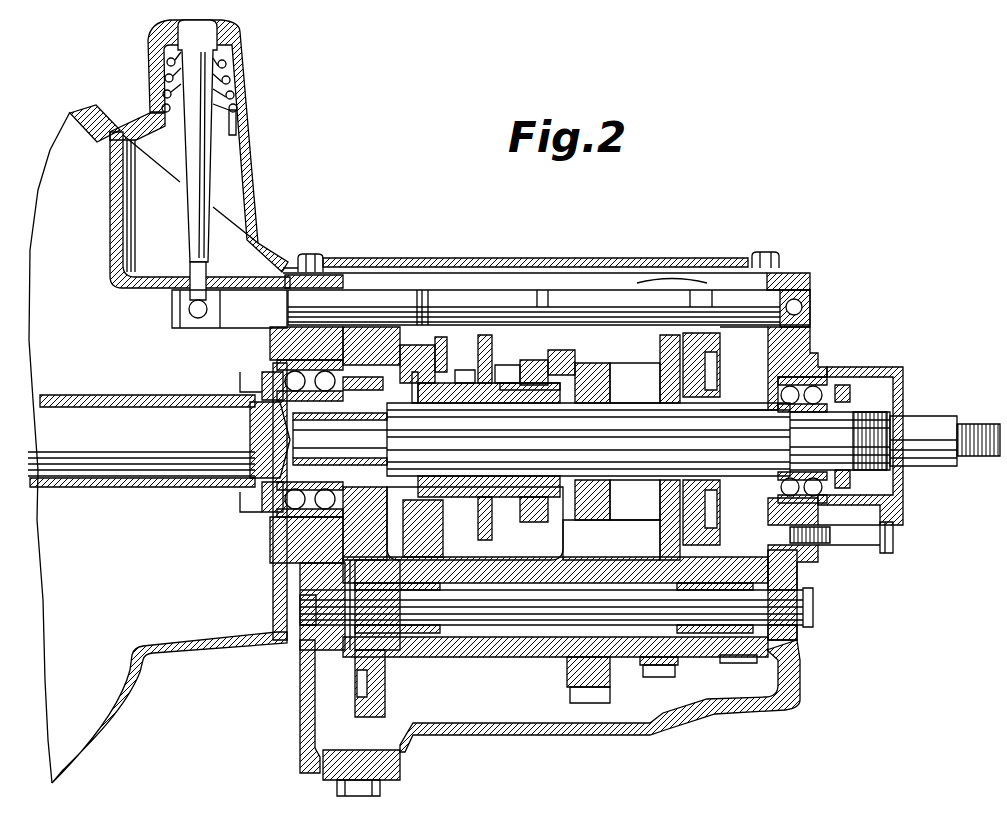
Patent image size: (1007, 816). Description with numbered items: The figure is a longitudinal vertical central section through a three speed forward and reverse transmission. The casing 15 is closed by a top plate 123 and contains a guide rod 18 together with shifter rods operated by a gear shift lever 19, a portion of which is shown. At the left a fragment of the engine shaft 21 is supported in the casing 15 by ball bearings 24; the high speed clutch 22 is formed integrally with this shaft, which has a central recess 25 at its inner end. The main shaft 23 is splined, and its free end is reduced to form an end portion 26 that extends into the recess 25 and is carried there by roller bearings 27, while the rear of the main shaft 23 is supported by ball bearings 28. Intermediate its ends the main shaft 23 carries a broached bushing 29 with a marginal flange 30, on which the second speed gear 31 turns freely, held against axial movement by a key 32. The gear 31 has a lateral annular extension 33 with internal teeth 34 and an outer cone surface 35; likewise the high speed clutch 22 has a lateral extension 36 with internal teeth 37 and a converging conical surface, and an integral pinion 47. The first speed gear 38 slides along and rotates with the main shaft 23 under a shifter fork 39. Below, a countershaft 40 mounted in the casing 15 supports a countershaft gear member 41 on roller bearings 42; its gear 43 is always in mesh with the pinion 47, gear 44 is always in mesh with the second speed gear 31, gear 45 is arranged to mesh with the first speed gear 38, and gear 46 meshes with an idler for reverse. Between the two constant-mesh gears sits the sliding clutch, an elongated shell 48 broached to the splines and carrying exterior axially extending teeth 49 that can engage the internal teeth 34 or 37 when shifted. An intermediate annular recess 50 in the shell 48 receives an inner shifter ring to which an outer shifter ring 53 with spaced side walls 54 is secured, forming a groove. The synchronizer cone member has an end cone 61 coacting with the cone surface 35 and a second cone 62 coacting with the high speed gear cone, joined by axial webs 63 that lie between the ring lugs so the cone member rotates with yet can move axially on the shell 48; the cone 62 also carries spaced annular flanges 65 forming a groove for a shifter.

The casing 15 is at (760, 698).
The guide rod 18 is at (370, 300).
The gear shift lever 19 is at (200, 165).
The engine shaft 21 is at (245, 489).
The high speed clutch 22 is at (395, 378).
The main shaft 23 is at (645, 482).
The ball bearings 24 is at (255, 535).
The recess 25 is at (270, 520).
The end portion 26 is at (313, 438).
The roller bearings 27 is at (265, 490).
The ball bearings 28 is at (815, 393).
The bushing 29 is at (545, 510).
The marginal flange 30 is at (628, 478).
The second speed gear 31 is at (625, 378).
The key 32 is at (590, 370).
The lateral annular extension 33 is at (548, 530).
The internal teeth 34 is at (560, 362).
The cone surface 35 is at (525, 500).
The lateral extension 36 is at (415, 375).
The internal teeth 37 is at (410, 518).
The first speed gear 38 is at (712, 370).
The shifter fork 39 is at (662, 375).
The countershaft 40 is at (780, 627).
The countershaft gear member 41 is at (520, 650).
The roller bearings 42 is at (420, 640).
The gear 43 is at (388, 708).
The gear 44 is at (572, 685).
The gear 45 is at (660, 672).
The gear 46 is at (735, 655).
The pinion 47 is at (365, 390).
The shell 48 is at (465, 380).
The axially extending teeth 49 is at (520, 380).
The intermediate annular recess 50 is at (485, 505).
The outer shifter ring 53 is at (505, 378).
The side walls 54 is at (482, 360).
The end cone 61 is at (542, 370).
The second cone 62 is at (412, 378).
The axial webs 63 is at (405, 372).
The annular flanges 65 is at (442, 345).
The top plate 123 is at (590, 258).